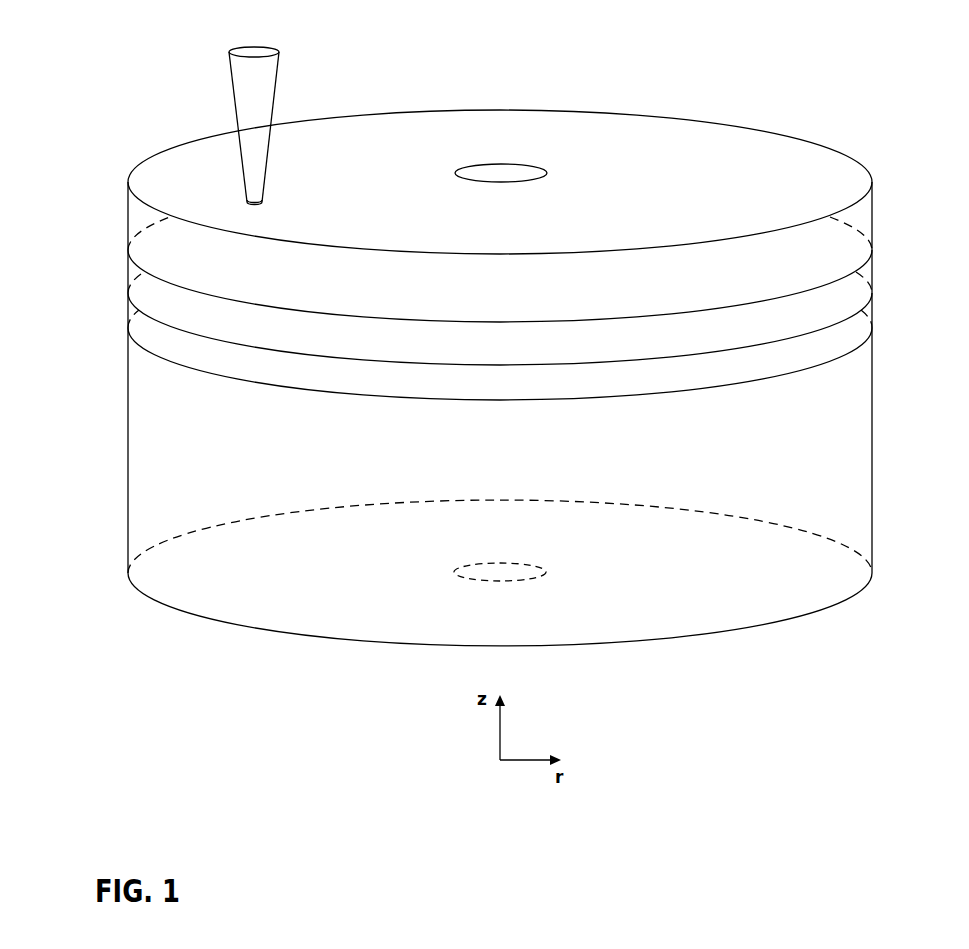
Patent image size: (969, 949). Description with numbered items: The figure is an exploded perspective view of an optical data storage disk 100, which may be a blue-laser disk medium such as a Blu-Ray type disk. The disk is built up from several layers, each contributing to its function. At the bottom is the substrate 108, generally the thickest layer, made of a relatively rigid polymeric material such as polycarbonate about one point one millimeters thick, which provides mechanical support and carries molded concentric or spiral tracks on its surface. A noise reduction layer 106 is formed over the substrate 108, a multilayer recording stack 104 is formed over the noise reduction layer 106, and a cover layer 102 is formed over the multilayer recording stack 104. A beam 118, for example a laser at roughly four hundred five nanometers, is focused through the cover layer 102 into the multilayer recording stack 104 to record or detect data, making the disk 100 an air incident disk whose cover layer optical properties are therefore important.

The optical data storage disk 100 is at (88, 116).
The cover layer 102 is at (148, 215).
The multilayer recording stack 104 is at (148, 288).
The noise reduction layer 106 is at (148, 326).
The substrate 108 is at (148, 441).
The beam 118 is at (280, 51).